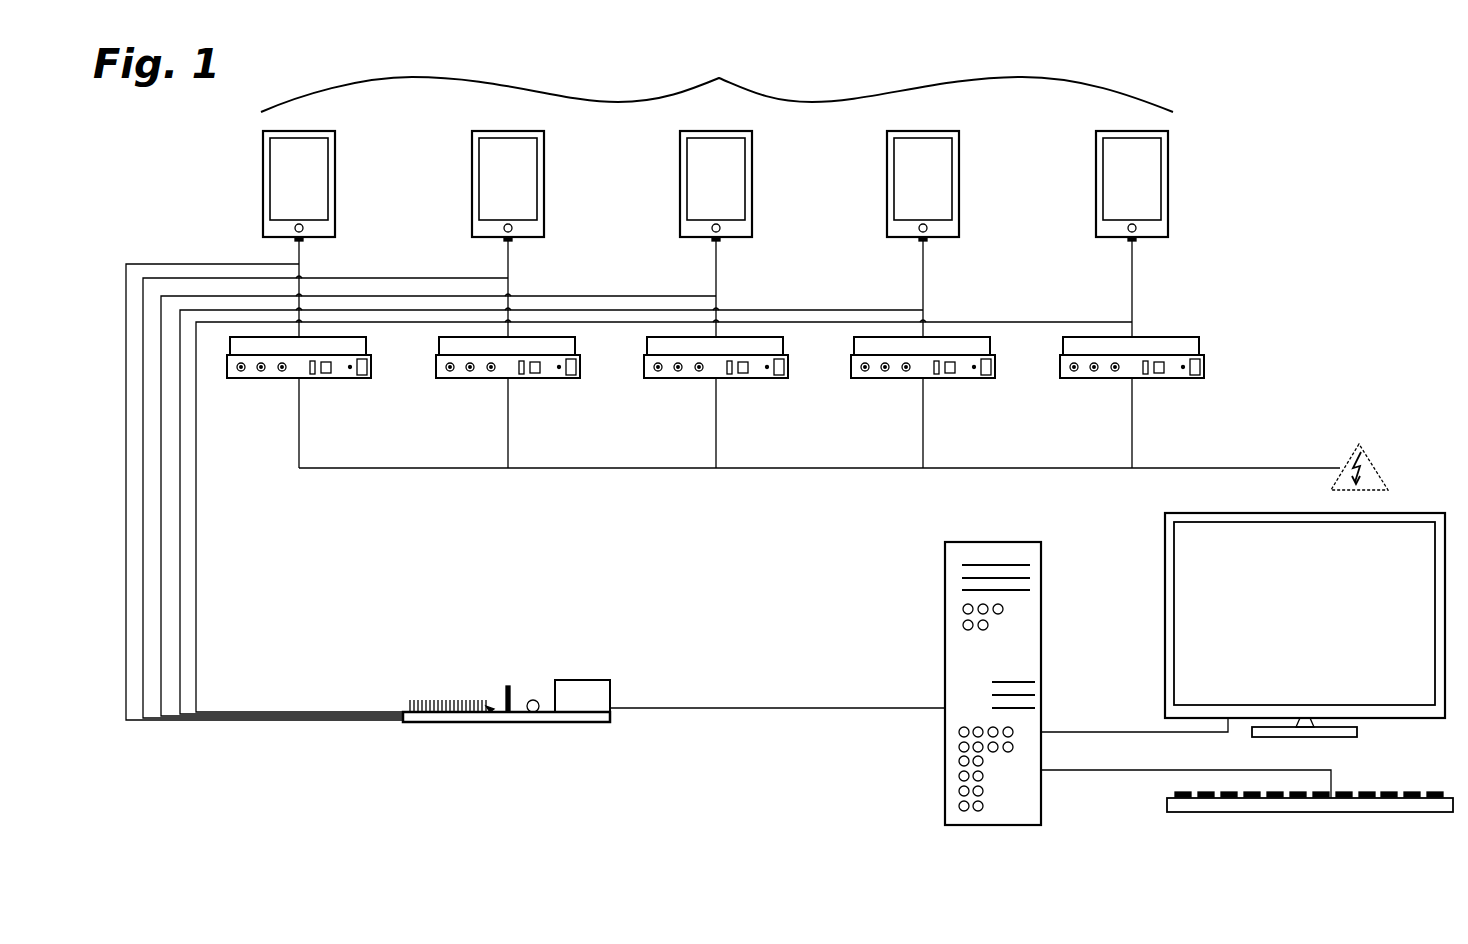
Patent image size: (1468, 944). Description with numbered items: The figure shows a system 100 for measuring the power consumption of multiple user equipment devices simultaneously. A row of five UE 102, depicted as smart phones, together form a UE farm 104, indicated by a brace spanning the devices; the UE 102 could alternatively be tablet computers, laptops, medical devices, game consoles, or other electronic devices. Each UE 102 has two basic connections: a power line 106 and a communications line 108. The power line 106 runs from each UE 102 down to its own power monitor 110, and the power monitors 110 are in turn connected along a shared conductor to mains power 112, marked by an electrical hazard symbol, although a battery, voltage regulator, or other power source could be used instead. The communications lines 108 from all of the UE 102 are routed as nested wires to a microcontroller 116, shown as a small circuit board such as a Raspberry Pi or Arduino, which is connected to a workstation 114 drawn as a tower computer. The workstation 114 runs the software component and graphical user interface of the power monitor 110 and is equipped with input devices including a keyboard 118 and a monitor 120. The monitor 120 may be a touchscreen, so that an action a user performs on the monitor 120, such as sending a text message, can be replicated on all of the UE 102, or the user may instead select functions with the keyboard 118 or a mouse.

The system 100 is at (162, 168).
The user equipment (UE) 102 is at (335, 175).
The UE farm 104 is at (717, 80).
The power line 106 is at (300, 272).
The communications line 108 is at (297, 262).
The power monitor 110 is at (372, 368).
The mains power 112 is at (602, 469).
The workstation 114 is at (1088, 826).
The microcontroller 116 is at (610, 690).
The keyboard 118 is at (1228, 812).
The monitor 120 is at (1243, 625).